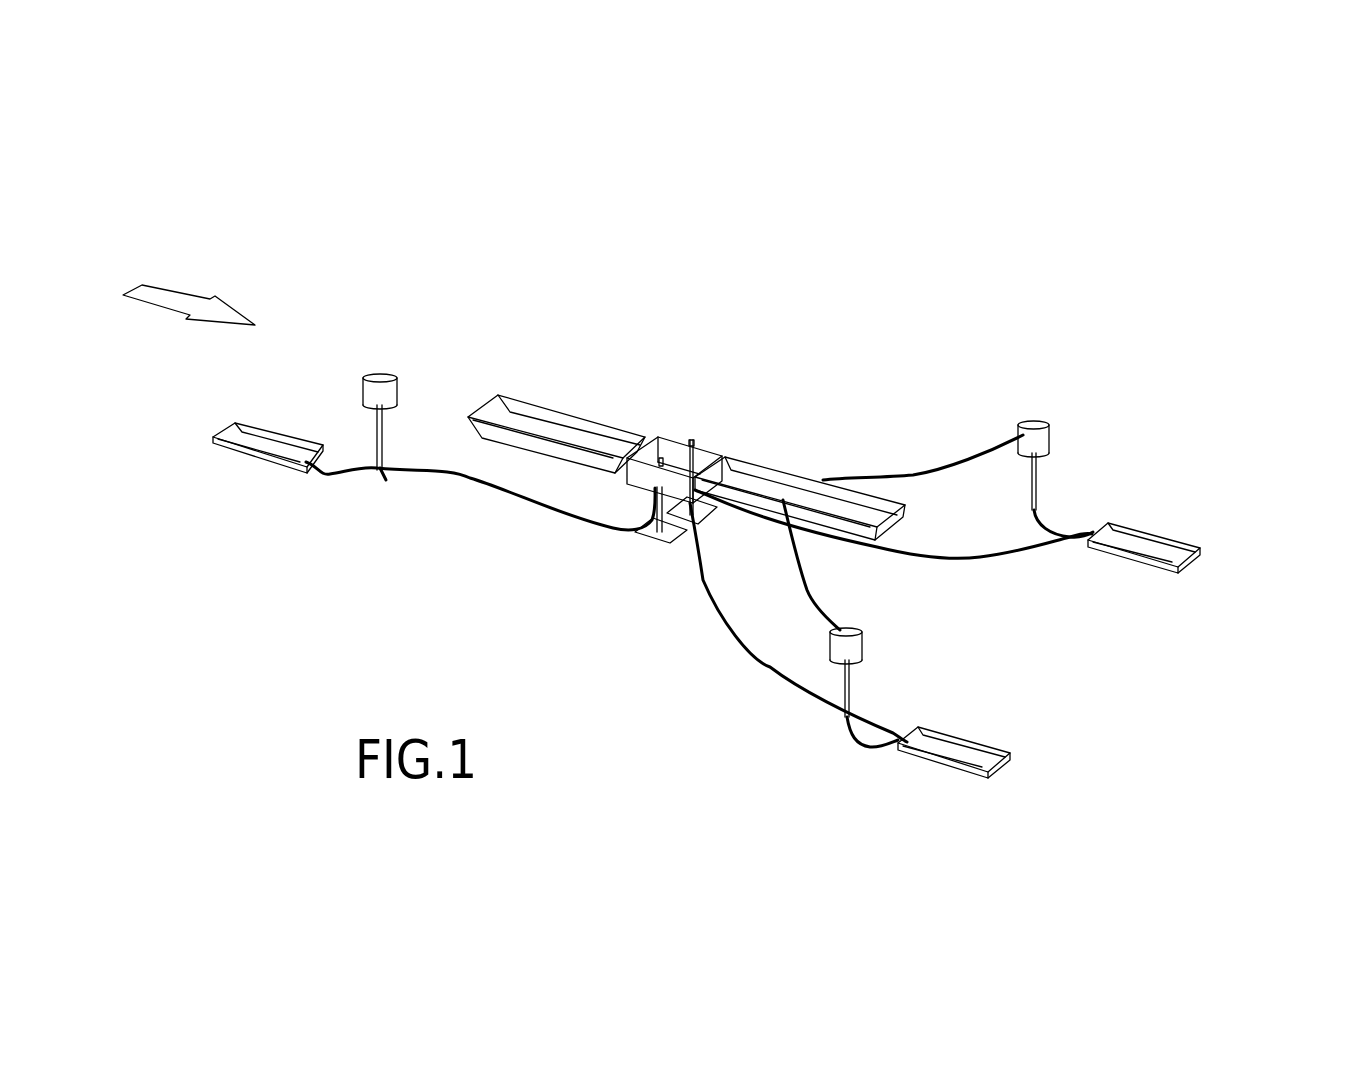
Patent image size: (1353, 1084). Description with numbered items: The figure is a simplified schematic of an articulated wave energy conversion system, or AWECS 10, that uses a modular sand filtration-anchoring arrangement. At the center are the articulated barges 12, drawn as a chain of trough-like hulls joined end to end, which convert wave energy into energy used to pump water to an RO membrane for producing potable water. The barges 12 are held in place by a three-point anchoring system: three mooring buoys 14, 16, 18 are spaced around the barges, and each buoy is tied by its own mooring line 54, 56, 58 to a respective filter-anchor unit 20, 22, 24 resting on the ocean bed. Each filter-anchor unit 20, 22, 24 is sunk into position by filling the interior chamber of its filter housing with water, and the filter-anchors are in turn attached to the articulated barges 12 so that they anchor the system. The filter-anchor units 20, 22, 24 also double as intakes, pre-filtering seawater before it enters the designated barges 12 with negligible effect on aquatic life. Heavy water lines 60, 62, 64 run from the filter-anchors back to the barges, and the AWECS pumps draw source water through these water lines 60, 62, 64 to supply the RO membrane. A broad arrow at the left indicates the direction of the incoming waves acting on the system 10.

The AWECS 10 is at (940, 321).
The articulated barges 12 is at (543, 403).
The mooring buoy 14 is at (1042, 422).
The mooring buoy 16 is at (860, 630).
The mooring buoy 18 is at (393, 378).
The filter-anchor unit 20 is at (1193, 540).
The filter-anchor unit 22 is at (1000, 745).
The filter-anchor unit 24 is at (295, 467).
The mooring line 54 is at (1035, 483).
The mooring line 56 is at (862, 743).
The mooring line 58 is at (377, 437).
The water line 60 is at (927, 557).
The water line 62 is at (768, 663).
The water line 64 is at (477, 477).